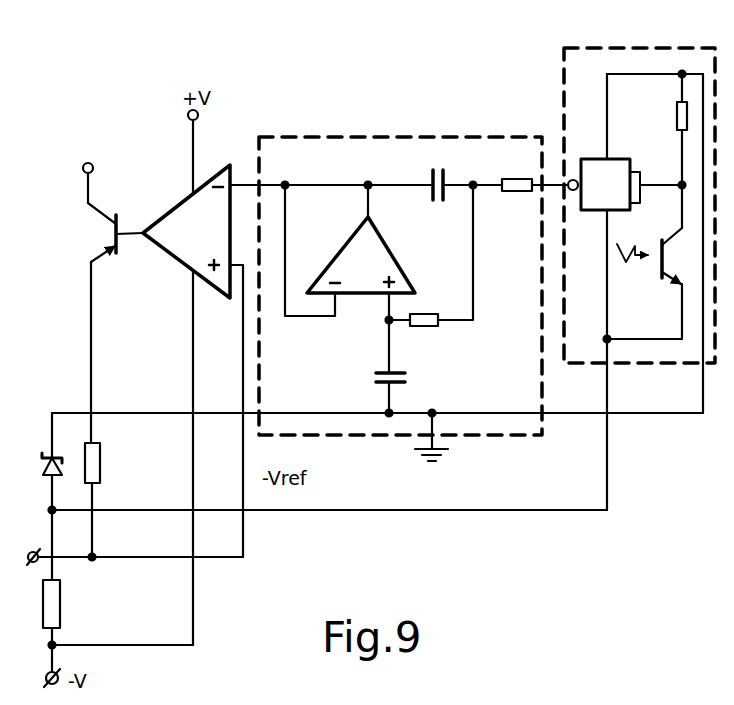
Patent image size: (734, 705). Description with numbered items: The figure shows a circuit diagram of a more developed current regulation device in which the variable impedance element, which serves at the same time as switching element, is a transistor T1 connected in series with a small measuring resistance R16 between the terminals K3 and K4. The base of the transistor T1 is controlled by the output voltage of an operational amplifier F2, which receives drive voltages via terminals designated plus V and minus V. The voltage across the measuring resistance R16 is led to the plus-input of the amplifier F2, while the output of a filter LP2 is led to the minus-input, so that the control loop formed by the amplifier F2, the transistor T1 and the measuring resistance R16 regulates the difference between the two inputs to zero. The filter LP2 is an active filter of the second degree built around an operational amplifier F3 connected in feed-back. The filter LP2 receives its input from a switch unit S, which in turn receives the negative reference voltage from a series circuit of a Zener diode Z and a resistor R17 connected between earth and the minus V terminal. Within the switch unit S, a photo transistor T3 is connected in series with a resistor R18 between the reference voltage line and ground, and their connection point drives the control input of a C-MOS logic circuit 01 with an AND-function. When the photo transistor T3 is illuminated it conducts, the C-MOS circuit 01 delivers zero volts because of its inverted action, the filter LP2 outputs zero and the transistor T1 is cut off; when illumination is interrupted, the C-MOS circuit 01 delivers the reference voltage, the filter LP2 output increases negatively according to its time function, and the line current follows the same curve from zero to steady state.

The terminal K3 is at (88, 162).
The transistor T1 is at (118, 246).
The operational amplifier F2 is at (172, 207).
The filter LP2 is at (400, 263).
The operational amplifier F3 is at (382, 250).
The switch unit S is at (639, 188).
The resistor R18 is at (677, 108).
The C-MOS logic circuit 01 is at (622, 158).
The photo transistor T3 is at (660, 268).
The Zener diode Z is at (43, 458).
The measuring resistance R16 is at (101, 460).
The terminal K4 is at (31, 550).
The resistor R17 is at (61, 600).